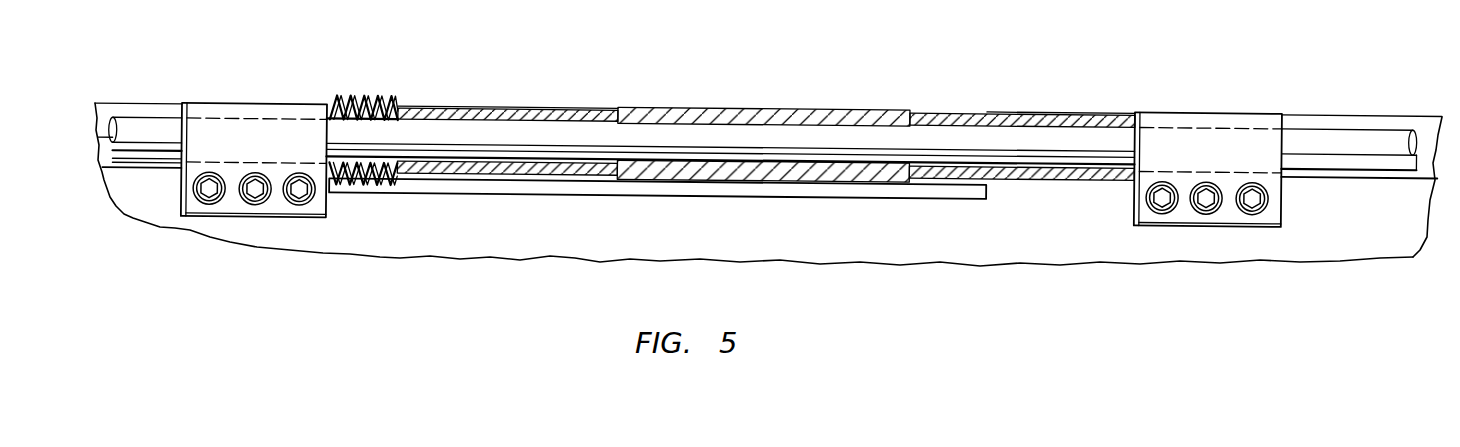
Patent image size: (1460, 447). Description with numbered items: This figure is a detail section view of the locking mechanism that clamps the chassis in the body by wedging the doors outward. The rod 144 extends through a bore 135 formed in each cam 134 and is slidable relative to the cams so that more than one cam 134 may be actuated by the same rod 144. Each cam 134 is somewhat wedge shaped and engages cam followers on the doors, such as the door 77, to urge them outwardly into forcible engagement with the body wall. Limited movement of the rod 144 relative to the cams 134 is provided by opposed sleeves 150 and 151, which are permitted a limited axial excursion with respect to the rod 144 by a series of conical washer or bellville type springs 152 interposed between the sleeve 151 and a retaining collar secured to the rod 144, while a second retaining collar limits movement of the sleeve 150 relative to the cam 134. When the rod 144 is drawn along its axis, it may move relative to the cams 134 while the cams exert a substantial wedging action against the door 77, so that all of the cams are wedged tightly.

The door 77 is at (1398, 117).
The cam 134 is at (755, 106).
The bore 135 is at (774, 160).
The rod 144 is at (1353, 165).
The sleeve 150 is at (1017, 113).
The sleeve 151 is at (517, 107).
The springs 152 is at (392, 92).